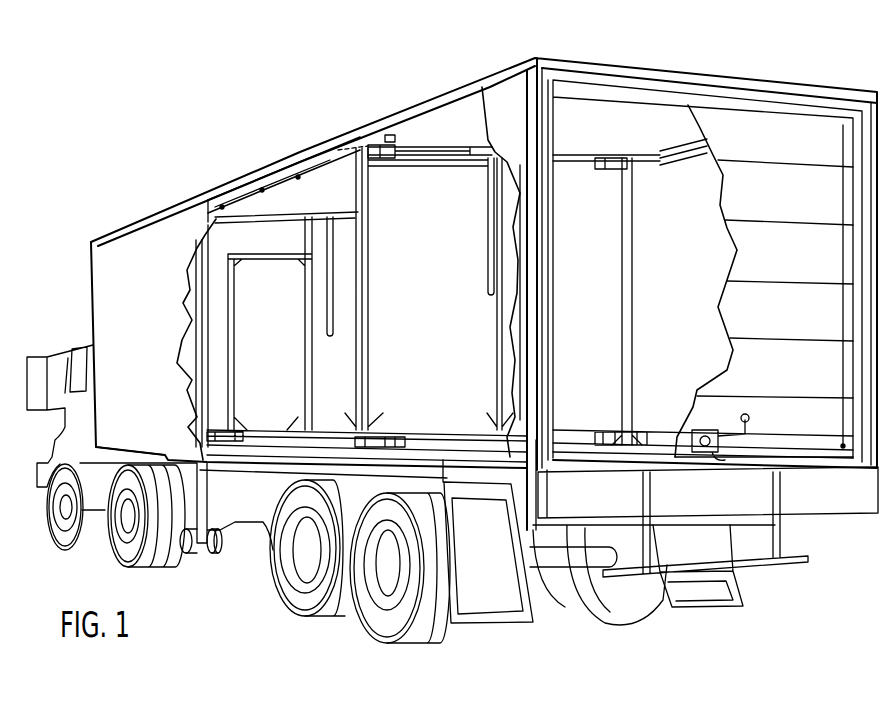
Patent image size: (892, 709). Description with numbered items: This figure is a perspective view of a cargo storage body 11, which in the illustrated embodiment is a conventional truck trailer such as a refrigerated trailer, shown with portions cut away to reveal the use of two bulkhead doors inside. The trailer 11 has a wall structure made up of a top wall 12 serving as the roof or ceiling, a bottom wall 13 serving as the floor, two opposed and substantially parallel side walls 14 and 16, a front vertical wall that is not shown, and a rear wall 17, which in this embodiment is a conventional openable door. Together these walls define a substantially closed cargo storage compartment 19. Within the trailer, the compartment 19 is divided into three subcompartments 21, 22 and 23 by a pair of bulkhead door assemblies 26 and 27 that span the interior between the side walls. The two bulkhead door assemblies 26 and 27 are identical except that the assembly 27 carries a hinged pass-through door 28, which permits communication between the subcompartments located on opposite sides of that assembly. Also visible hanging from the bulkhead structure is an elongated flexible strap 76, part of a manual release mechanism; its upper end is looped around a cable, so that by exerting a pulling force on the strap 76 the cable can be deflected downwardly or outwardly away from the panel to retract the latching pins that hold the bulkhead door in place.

The cargo storage body 11 is at (151, 212).
The top wall 12 is at (450, 117).
The bottom wall 13 is at (470, 452).
The side wall 14 is at (707, 358).
The side wall 16 is at (110, 310).
The rear wall 17 is at (782, 135).
The cargo storage compartment 19 is at (648, 123).
The subcompartment 21 is at (595, 127).
The subcompartment 22 is at (335, 183).
The subcompartment 23 is at (188, 365).
The bulkhead door assembly 26 is at (419, 135).
The bulkhead door assembly 27 is at (277, 222).
The hinged pass-through door 28 is at (247, 337).
The elongated flexible strap 76 is at (490, 280).